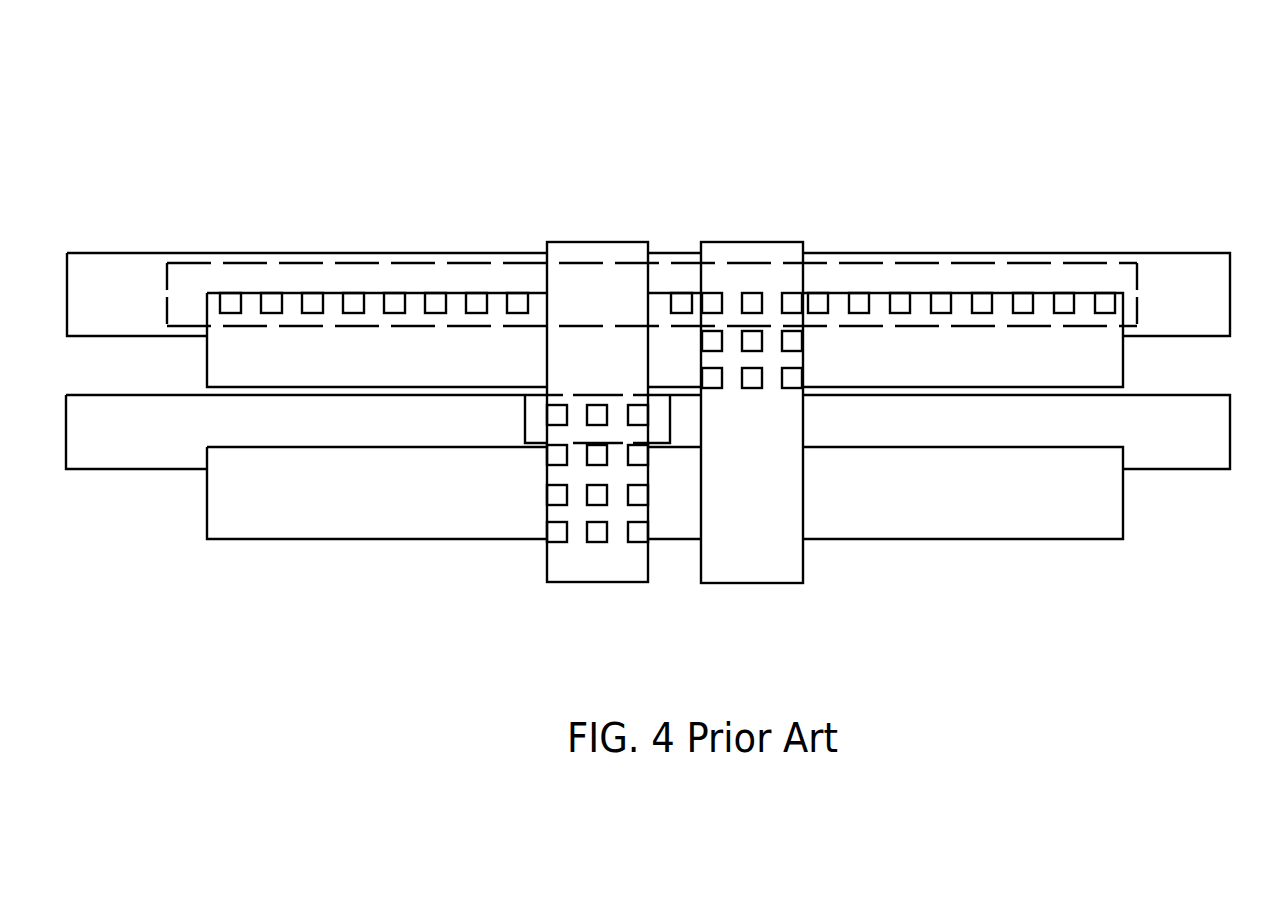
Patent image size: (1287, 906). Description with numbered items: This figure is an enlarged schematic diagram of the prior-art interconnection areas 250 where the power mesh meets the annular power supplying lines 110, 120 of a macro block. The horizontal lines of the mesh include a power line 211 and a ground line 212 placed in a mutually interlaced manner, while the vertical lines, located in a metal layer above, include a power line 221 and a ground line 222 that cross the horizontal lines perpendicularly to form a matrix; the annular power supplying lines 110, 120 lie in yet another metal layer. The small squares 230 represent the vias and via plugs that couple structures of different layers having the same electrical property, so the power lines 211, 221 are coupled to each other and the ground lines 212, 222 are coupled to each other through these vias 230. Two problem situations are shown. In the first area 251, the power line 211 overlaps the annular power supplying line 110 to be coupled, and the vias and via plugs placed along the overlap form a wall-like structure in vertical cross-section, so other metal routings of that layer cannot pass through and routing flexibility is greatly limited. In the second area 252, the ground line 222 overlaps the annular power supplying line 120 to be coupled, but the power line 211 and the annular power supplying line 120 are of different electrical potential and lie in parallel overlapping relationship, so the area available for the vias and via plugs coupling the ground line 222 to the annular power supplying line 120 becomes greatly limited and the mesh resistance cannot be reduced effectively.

The annular power supplying line 110 is at (94, 253).
The annular power supplying line 120 is at (1198, 417).
The power line 211 is at (225, 370).
The ground line 212 is at (225, 502).
The power line 221 is at (738, 255).
The ground line 222 is at (580, 252).
The vias and via plugs 230 is at (855, 305).
The areas 250 is at (1132, 137).
The area 251 is at (255, 262).
The area 252 is at (525, 412).